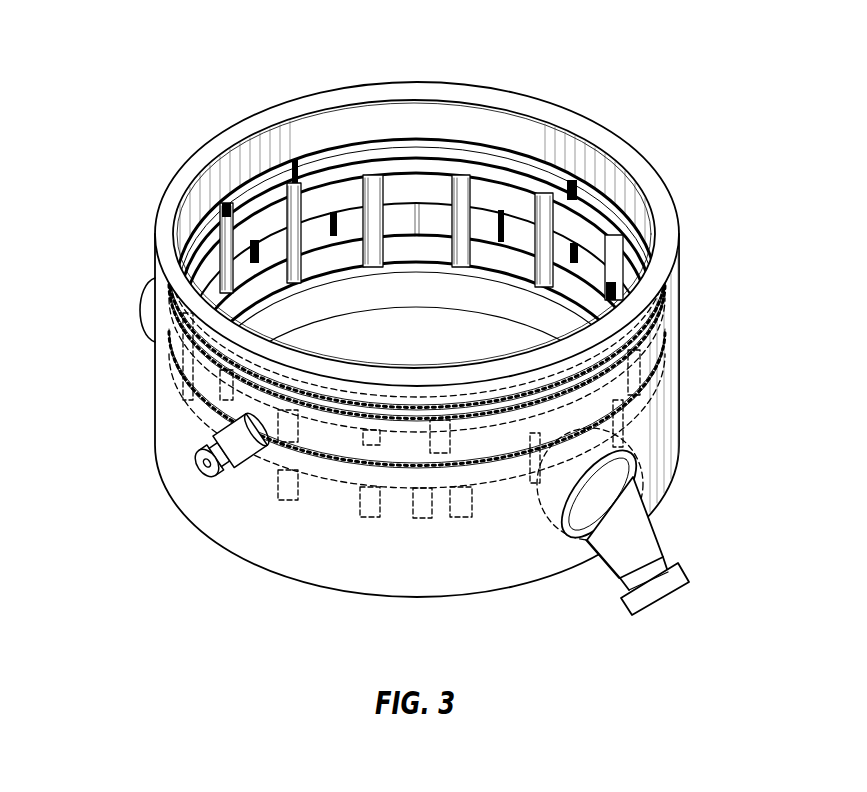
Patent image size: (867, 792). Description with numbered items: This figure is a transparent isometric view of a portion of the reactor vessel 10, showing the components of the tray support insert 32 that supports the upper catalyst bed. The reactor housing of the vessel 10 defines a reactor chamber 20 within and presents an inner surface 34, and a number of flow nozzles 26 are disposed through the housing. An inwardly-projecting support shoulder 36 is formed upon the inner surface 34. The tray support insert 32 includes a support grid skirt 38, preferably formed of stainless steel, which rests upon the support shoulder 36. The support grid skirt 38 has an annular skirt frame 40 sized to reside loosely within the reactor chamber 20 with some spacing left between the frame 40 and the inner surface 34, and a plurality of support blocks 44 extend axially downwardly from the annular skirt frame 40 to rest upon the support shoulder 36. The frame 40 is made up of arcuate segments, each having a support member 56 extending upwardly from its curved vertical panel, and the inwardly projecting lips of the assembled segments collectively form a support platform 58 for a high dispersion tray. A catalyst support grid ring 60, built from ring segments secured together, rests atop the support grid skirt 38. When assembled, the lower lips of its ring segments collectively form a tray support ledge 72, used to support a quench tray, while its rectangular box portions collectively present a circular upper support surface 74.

The reactor vessel 10 is at (150, 98).
The reactor chamber 20 is at (607, 181).
The flow nozzles 26 is at (150, 305).
The tray support insert 32 is at (634, 214).
The inner surface 34 is at (243, 150).
The support shoulder 36 is at (498, 274).
The support grid skirt 38 is at (433, 278).
The annular skirt frame 40 is at (484, 194).
The support blocks 44 is at (282, 502).
The support member 56 is at (368, 193).
The support platform 58 is at (514, 236).
The catalyst support grid ring 60 is at (390, 134).
The tray support ledge 72 is at (316, 198).
The circular upper support surface 74 is at (422, 132).